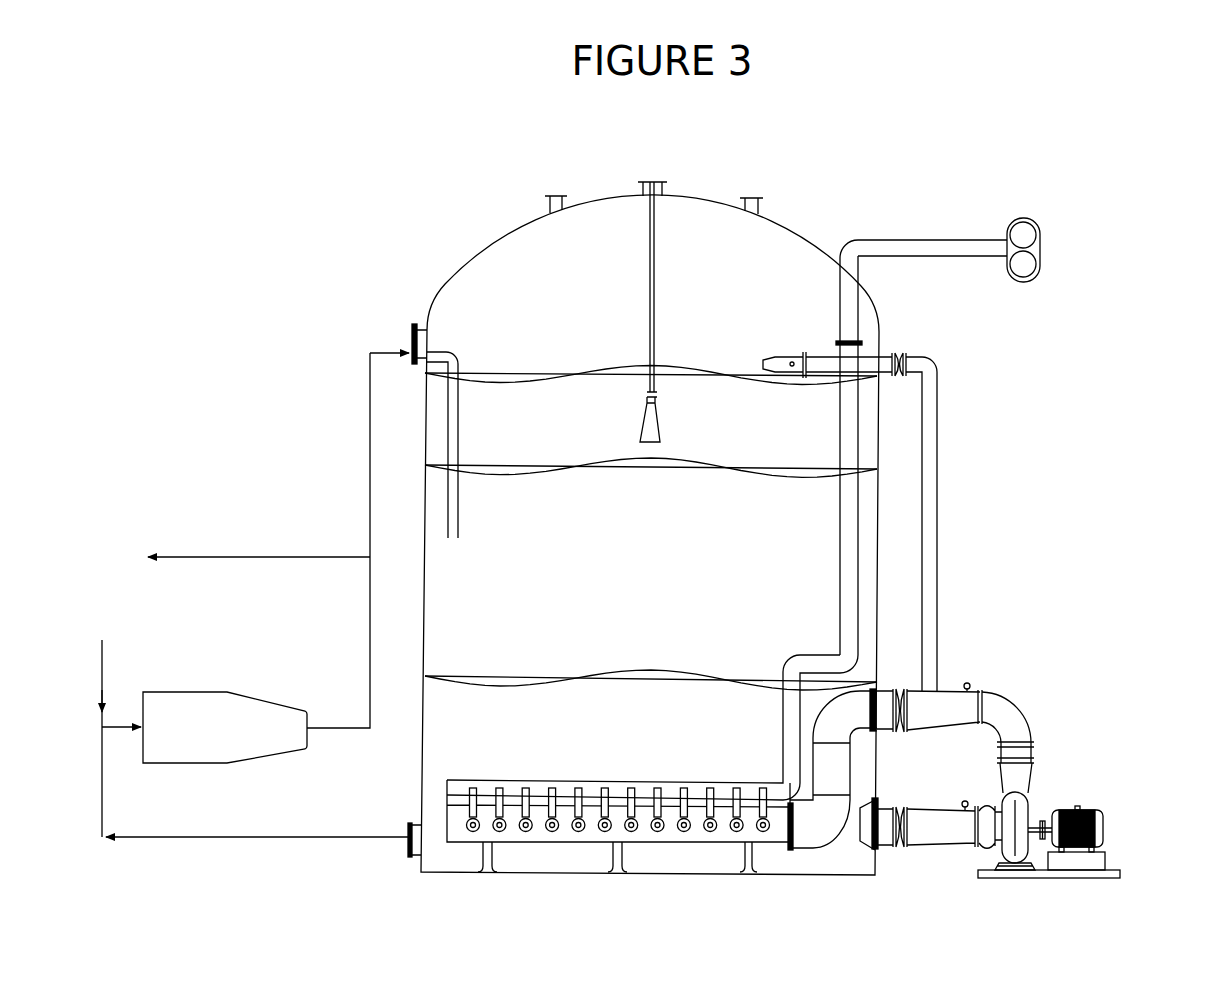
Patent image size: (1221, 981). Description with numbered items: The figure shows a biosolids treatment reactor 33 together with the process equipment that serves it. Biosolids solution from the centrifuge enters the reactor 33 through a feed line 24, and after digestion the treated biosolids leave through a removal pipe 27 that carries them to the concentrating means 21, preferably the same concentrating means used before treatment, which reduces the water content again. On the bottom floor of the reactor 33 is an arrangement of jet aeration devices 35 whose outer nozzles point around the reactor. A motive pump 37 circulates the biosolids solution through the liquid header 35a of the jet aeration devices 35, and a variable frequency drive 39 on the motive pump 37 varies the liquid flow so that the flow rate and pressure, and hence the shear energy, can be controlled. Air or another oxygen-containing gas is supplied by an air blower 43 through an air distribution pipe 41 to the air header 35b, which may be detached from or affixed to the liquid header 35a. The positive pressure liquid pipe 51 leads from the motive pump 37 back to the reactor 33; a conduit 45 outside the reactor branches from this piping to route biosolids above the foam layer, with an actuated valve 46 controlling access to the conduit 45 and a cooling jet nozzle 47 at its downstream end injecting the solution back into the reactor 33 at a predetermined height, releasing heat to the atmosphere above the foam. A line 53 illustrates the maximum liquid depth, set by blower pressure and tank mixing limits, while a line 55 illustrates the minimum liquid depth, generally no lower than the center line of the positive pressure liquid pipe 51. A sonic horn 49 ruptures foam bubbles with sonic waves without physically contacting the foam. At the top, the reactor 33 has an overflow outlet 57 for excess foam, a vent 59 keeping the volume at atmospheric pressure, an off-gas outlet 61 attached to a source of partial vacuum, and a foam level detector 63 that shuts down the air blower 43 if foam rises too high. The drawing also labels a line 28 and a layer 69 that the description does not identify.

The concentrating means 21 is at (185, 689).
The feed line 24 is at (366, 455).
The removal pipe 27 is at (265, 843).
The gas outlet line 28 is at (270, 554).
The treatment reactor 33 is at (468, 251).
The jet aeration devices 35 is at (677, 848).
The liquid header 35a is at (830, 849).
The air header 35b is at (586, 778).
The motive pump 37 is at (1029, 805).
The variable frequency drive 39 is at (1101, 805).
The air distribution pipe 41 is at (836, 532).
The air blower 43 is at (1046, 250).
The conduit 45 is at (940, 532).
The actuated valve 46 is at (899, 350).
The cooling jet nozzle 47 is at (785, 347).
The sonic horn 49 is at (666, 422).
The positive pressure liquid pipe 51 is at (1021, 699).
The line 53 is at (590, 462).
The line 55 is at (588, 673).
The overflow outlet 57 is at (409, 333).
The vent 59 is at (557, 190).
The off-gas outlet 61 is at (654, 180).
The foam level detector 63 is at (755, 192).
The upper layer 69 is at (590, 370).